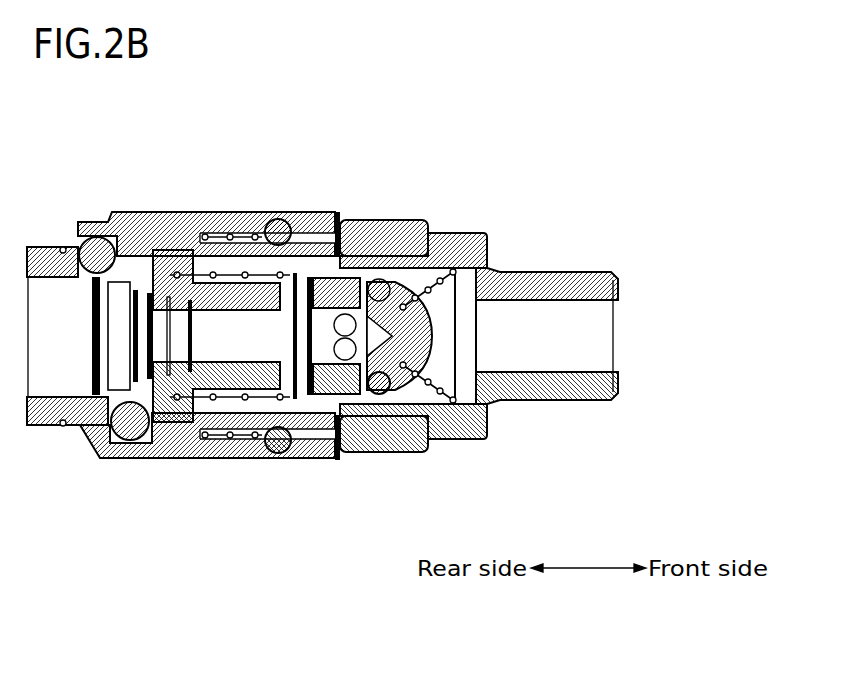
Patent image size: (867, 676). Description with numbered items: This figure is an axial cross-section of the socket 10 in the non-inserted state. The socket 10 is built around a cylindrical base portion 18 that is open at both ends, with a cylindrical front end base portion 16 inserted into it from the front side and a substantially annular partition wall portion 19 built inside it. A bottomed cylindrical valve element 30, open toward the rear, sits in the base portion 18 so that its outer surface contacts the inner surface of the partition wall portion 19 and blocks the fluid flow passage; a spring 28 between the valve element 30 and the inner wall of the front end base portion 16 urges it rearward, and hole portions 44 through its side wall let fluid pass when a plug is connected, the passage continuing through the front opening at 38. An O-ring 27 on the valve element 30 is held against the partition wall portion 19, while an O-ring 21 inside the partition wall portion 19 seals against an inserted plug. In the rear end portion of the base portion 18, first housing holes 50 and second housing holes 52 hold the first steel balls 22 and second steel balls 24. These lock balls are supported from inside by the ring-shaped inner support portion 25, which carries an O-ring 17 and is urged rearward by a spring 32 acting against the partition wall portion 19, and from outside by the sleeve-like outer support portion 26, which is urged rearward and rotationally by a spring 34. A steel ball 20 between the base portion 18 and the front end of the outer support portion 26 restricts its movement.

The socket 10 is at (265, 134).
The front end base portion 16 is at (518, 272).
The O-ring 17 is at (160, 212).
The base portion 18 is at (428, 233).
The partition wall portion 19 is at (340, 452).
The steel ball 20 is at (284, 212).
The O-ring 21 is at (309, 262).
The first steel balls 22 is at (145, 458).
The second steel balls 24 is at (103, 222).
The inner support portion 25 is at (208, 458).
The outer support portion 26 is at (227, 212).
The O-ring 27 is at (378, 220).
The spring 28 is at (437, 440).
The valve element 30 is at (380, 452).
The spring 32 is at (288, 458).
The spring 34 is at (250, 458).
The flow passage 38 is at (558, 332).
The hole portions 44 is at (336, 212).
The first housing holes 50 is at (108, 458).
The second housing holes 52 is at (121, 236).